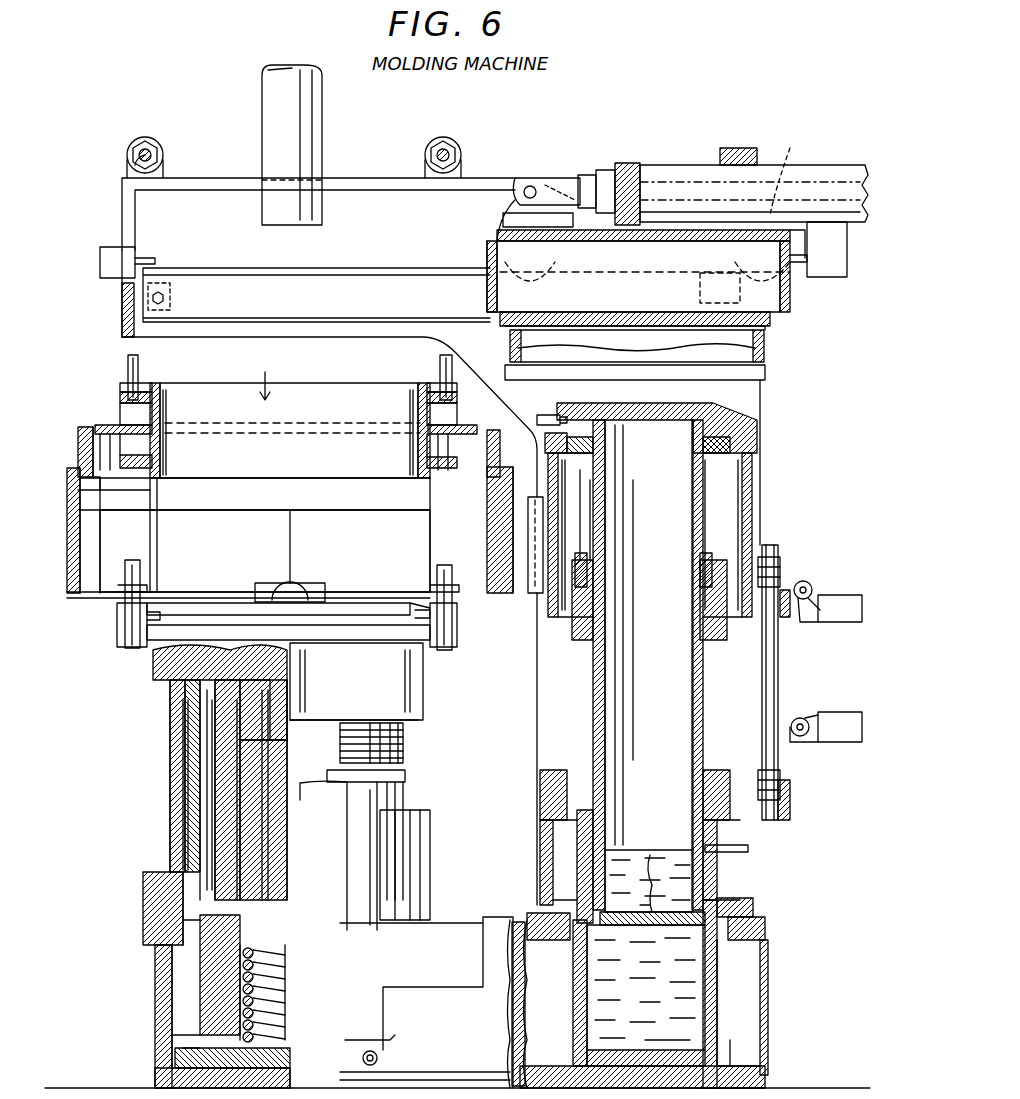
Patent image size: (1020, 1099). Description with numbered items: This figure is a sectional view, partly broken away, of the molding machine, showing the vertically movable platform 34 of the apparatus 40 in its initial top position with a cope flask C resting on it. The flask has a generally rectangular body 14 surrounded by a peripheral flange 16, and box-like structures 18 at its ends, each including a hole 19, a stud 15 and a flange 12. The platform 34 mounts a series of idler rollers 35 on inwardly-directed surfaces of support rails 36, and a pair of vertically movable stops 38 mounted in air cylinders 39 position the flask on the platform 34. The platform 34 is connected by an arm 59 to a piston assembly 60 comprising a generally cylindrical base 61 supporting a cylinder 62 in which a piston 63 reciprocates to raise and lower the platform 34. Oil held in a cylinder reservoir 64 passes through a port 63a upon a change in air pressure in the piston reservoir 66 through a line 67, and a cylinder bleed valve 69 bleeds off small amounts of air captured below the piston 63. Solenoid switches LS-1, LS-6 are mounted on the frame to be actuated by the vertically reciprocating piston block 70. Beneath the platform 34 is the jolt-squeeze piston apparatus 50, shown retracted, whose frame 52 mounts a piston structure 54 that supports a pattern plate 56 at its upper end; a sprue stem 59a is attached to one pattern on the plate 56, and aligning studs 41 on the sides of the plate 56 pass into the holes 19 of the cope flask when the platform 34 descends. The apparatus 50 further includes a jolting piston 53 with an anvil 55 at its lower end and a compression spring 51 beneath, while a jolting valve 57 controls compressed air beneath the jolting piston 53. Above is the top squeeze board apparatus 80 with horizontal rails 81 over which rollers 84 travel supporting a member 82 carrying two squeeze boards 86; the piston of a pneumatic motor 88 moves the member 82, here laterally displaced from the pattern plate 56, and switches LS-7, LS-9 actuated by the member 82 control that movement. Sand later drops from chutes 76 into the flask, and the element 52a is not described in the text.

The flange 12 is at (148, 384).
The body 14 is at (295, 470).
The stud 15 is at (128, 365).
The peripheral flange 16 is at (108, 426).
The box-like structure 18 is at (150, 420).
The hole 19 is at (152, 453).
The platform 34 is at (225, 557).
The idler rollers 35 is at (95, 470).
The support rails 36 is at (78, 440).
The stops 38 is at (160, 494).
The air cylinders 39 is at (123, 628).
The apparatus 40 is at (78, 632).
The aligning studs 41 is at (135, 560).
The jolt-squeeze piston apparatus 50 is at (420, 830).
The compression spring 51 is at (268, 965).
The frame 52 is at (150, 930).
The base pin 52a is at (392, 1070).
The jolting piston 53 is at (205, 733).
The piston structure 54 is at (190, 793).
The anvil 55 is at (218, 963).
The pattern plate 56 is at (160, 650).
The jolting valve 57 is at (285, 796).
The arm 59 is at (305, 592).
The sprue stem 59a is at (300, 533).
The piston assembly 60 is at (775, 430).
The base 61 is at (770, 1000).
The cylinder 62 is at (705, 648).
The piston 63 is at (700, 498).
The port 63a is at (652, 870).
The cylinder reservoir 64 is at (612, 990).
The piston reservoir 66 is at (690, 712).
The line 67 is at (548, 414).
The cylinder bleed valve 69 is at (745, 855).
The piston block 70 is at (785, 620).
The chutes 76 is at (287, 210).
The top squeeze board apparatus 80 is at (668, 270).
The horizontal rails 81 is at (208, 280).
The member 82 is at (486, 255).
The rollers 84 is at (510, 200).
The squeeze boards 86 is at (625, 372).
The pneumatic motor 88 is at (665, 172).
The cope flask C is at (264, 373).
The solenoid switch LS-1 is at (843, 598).
The solenoid switch LS-6 is at (842, 712).
The switch LS-7 is at (108, 262).
The switch LS-9 is at (828, 280).